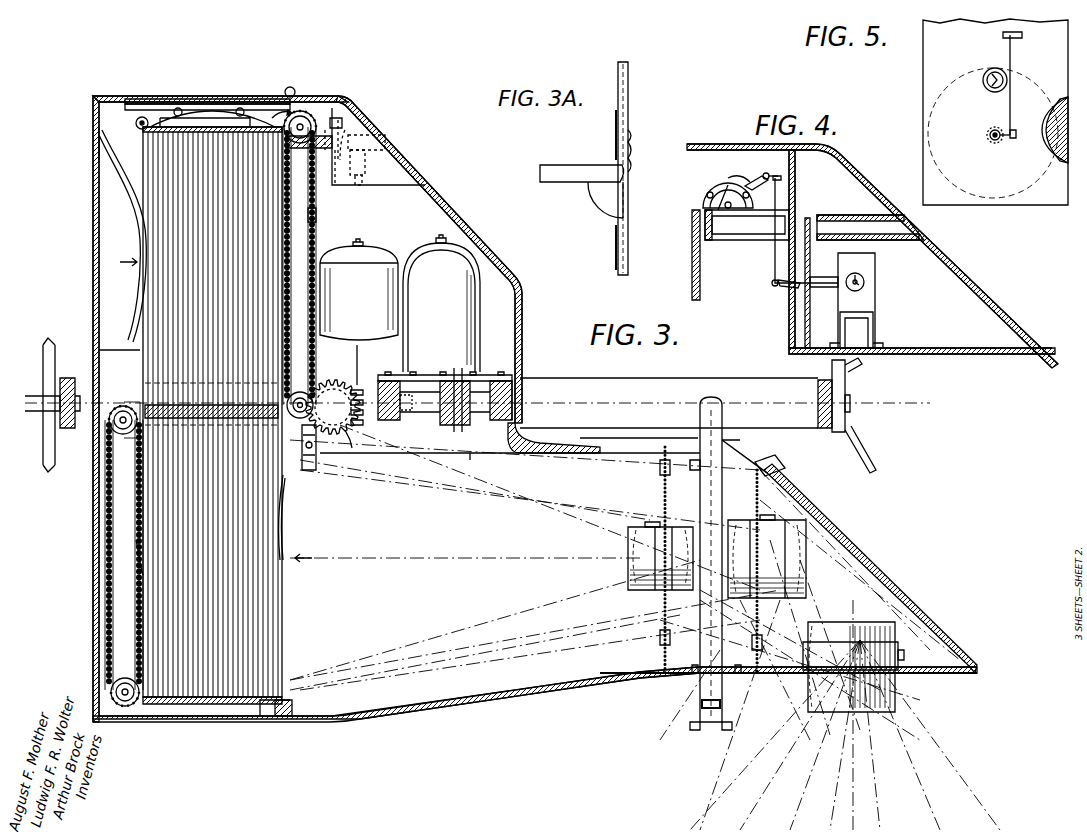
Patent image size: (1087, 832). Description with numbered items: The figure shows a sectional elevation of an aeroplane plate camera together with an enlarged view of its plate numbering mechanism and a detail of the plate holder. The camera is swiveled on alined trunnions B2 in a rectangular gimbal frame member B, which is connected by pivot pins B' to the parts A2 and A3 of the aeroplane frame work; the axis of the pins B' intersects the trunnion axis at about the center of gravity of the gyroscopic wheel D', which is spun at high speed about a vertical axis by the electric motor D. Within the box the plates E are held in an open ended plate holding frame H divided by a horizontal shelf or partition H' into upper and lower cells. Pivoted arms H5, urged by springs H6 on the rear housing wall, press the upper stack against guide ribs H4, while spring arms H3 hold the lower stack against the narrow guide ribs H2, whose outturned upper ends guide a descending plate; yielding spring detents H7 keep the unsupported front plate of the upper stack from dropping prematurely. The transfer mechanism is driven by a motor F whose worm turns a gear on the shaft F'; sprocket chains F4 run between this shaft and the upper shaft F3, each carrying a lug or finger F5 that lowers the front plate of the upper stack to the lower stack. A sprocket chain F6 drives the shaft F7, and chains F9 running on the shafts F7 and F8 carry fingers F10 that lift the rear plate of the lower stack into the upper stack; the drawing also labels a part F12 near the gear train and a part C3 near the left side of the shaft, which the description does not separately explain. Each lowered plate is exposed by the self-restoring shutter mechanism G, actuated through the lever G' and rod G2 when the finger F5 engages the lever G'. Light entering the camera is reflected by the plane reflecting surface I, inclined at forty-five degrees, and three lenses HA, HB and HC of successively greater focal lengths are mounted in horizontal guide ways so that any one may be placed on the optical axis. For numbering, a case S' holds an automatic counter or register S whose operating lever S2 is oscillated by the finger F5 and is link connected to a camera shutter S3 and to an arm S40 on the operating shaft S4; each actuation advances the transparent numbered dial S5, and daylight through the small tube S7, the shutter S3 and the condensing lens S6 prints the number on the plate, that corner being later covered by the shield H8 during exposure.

In FIG. 3, the plate holding frame H is at (207, 84).
In FIG. 3A, the plate holding frame H is at (641, 168).
In FIG. 3, the horizontal shelf or partition H' is at (166, 437).
In FIG. 3A, the horizontal shelf or partition H' is at (581, 158).
In FIG. 3, the stationary guide ribs H2 is at (286, 532).
In FIG. 3A, the stationary guide ribs H2 is at (616, 236).
In FIG. 3, the spring arms H3 is at (136, 548).
In FIG. 3A, the guide ribs H4 is at (616, 112).
In FIG. 3, the arms H5 is at (99, 165).
In FIG. 3, the springs H6 is at (143, 163).
In FIG. 3, the yielding spring detents H7 is at (310, 409).
In FIG. 3A, the yielding spring detents H7 is at (632, 150).
In FIG. 3, the shield H8 is at (307, 463).
In FIG. 3A, the shield H8 is at (596, 195).
In FIG. 3, the lens HA is at (628, 560).
In FIG. 3, the lens HB is at (765, 574).
In FIG. 3, the lens HC is at (812, 690).
In FIG. 3, the plates E is at (165, 240).
In FIG. 4, the plates E is at (692, 255).
In FIG. 3, the motor F is at (359, 332).
In FIG. 3, the shaft F' is at (299, 266).
In FIG. 3, the upper shaft F3 is at (302, 112).
In FIG. 4, the upper shaft F3 is at (724, 185).
In FIG. 3, the sprocket chains F4 is at (318, 220).
In FIG. 4, the sprocket chains F4 is at (703, 197).
In FIG. 3, the lug or finger F5 is at (280, 120).
In FIG. 4, the lug or finger F5 is at (767, 176).
In FIG. 3, the sprocket chain F6 is at (124, 555).
In FIG. 3, the shaft F7 is at (116, 428).
In FIG. 3, the shaft F8 is at (118, 692).
In FIG. 3, the sprocket chains F9 is at (120, 545).
In FIG. 3, the projections or fingers F10 is at (137, 406).
In FIG. 3, the pawl lever F12 is at (350, 432).
In FIG. 3, the shutter mechanism G is at (718, 559).
In FIG. 3, the lever G' is at (333, 442).
In FIG. 3, the rod G2 is at (470, 453).
In FIG. 3, the electric motor D is at (441, 303).
In FIG. 3, the gyroscopic wheel D' is at (528, 383).
In FIG. 3, the gimbal frame member B is at (477, 391).
In FIG. 3, the pivot pins B' is at (451, 396).
In FIG. 3, the trunnions B2 is at (448, 382).
In FIG. 3, the frame work part A2 is at (43, 356).
In FIG. 3, the frame work part A3 is at (860, 453).
In FIG. 3, the rod C3 is at (140, 350).
In FIG. 3, the plane reflecting surface I is at (900, 633).
In FIG. 3, the automatic counter or register S is at (368, 167).
In FIG. 4, the automatic counter or register S is at (851, 300).
In FIG. 3, the case S' is at (385, 146).
In FIG. 4, the case S' is at (872, 256).
In FIG. 5, the case S' is at (984, 112).
In FIG. 3, the operating lever S2 is at (334, 118).
In FIG. 4, the operating lever S2 is at (745, 182).
In FIG. 5, the operating lever S2 is at (1022, 35).
In FIG. 3, the camera shutter S3 is at (339, 120).
In FIG. 4, the camera shutter S3 is at (777, 225).
In FIG. 3, the operating shaft S4 is at (335, 160).
In FIG. 4, the operating shaft S4 is at (776, 282).
In FIG. 5, the operating shaft S4 is at (990, 135).
In FIG. 3, the transparent numbered dial S5 is at (347, 130).
In FIG. 4, the transparent numbered dial S5 is at (805, 310).
In FIG. 5, the transparent numbered dial S5 is at (1058, 97).
In FIG. 3, the condensing lens S6 is at (298, 150).
In FIG. 4, the condensing lens S6 is at (708, 224).
In FIG. 5, the condensing lens S6 is at (988, 72).
In FIG. 3, the small tube S7 is at (365, 135).
In FIG. 4, the small tube S7 is at (850, 216).
In FIG. 5, the arm S40 is at (998, 142).